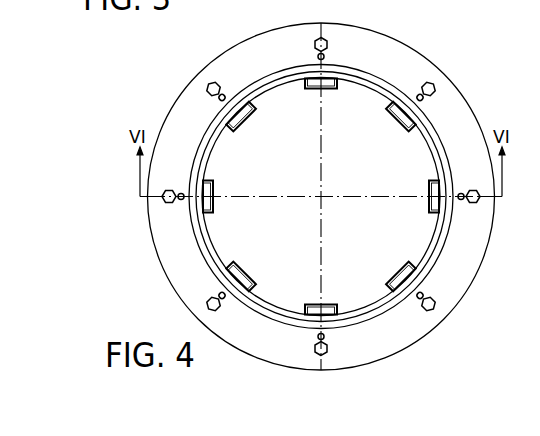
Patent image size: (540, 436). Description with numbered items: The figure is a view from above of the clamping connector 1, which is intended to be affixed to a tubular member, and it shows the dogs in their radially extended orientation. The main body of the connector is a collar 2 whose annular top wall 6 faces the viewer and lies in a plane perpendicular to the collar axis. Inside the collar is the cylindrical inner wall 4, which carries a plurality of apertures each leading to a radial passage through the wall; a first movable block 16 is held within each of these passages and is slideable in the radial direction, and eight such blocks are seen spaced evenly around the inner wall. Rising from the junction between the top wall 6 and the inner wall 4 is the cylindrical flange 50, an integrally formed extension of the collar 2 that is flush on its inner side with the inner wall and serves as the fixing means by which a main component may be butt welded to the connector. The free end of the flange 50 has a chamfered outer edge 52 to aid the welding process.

The clamping connector 1 is at (149, 108).
The collar 2 is at (448, 322).
The cylindrical inner wall 4 is at (430, 155).
The annular top wall 6 is at (473, 257).
The first movable block 16 is at (340, 80).
The cylindrical flange 50 is at (435, 125).
The chamfered outer edge 52 is at (393, 88).